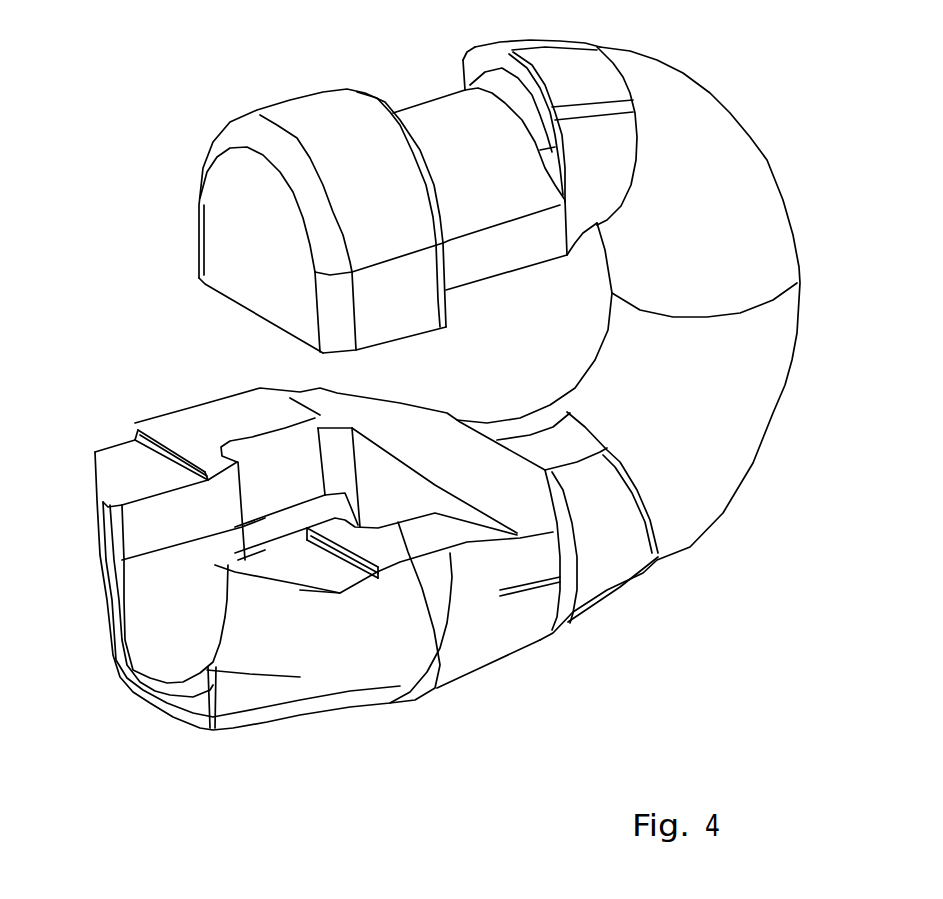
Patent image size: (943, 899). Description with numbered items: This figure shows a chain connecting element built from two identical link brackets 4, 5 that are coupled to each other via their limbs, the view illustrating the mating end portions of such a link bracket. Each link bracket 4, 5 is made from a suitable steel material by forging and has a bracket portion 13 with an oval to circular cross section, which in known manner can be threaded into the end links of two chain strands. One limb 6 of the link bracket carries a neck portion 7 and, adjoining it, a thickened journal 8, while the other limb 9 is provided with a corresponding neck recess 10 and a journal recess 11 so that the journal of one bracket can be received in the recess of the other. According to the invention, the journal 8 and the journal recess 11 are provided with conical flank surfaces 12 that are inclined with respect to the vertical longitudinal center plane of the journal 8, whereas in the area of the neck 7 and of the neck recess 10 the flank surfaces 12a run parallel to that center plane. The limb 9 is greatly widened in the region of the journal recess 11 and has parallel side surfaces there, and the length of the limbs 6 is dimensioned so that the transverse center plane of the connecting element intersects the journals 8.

The link bracket 4 is at (632, 61).
The link bracket 5 is at (617, 136).
The limb 6 is at (253, 234).
The neck portion 7 is at (495, 139).
The journal 8 is at (322, 193).
The limb 9 is at (317, 604).
The neck recess 10 is at (170, 601).
The journal recess 11 is at (396, 566).
The flank surfaces 12 is at (315, 326).
The flank surfaces 12a is at (331, 339).
The bracket portion 13 is at (649, 343).